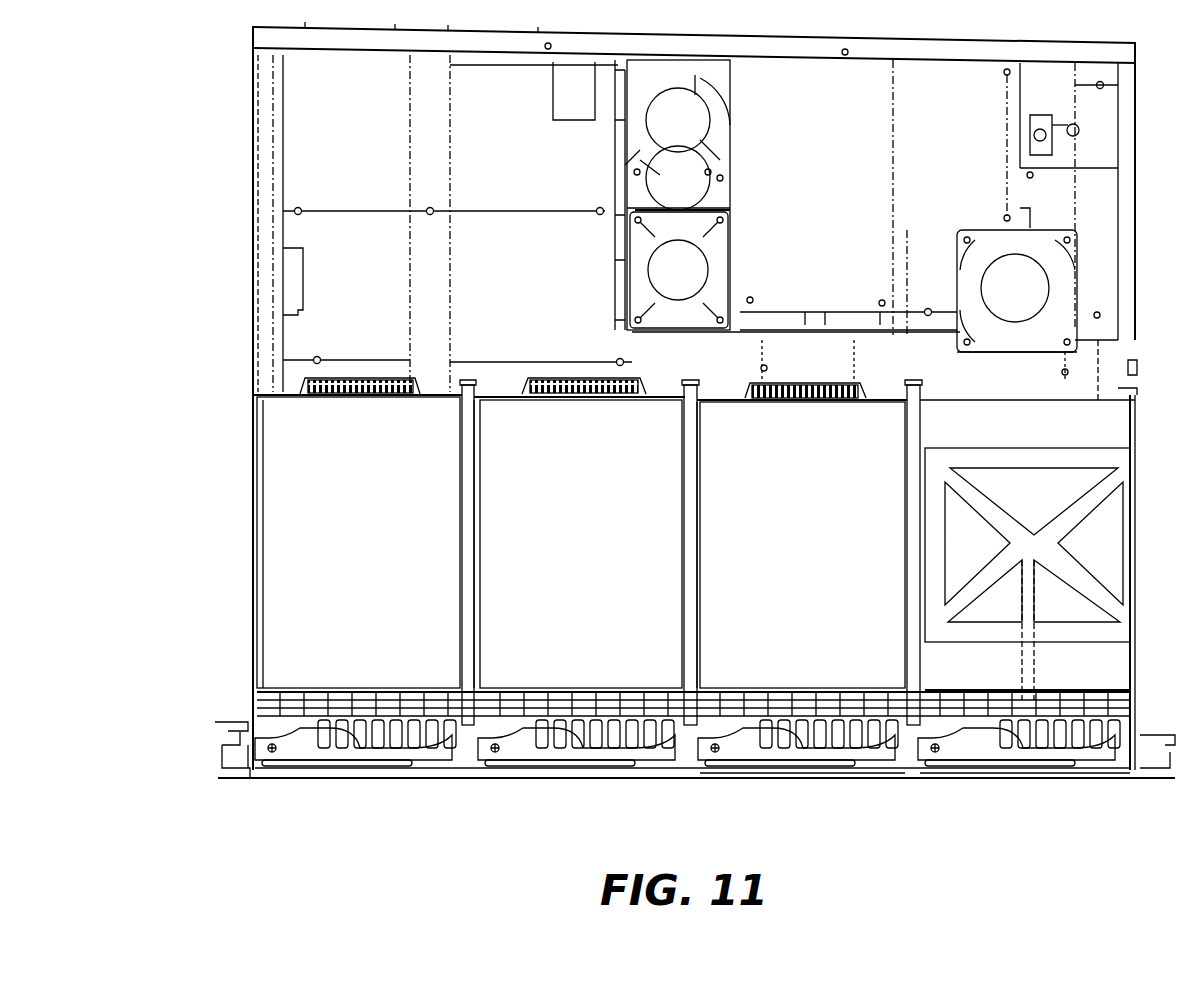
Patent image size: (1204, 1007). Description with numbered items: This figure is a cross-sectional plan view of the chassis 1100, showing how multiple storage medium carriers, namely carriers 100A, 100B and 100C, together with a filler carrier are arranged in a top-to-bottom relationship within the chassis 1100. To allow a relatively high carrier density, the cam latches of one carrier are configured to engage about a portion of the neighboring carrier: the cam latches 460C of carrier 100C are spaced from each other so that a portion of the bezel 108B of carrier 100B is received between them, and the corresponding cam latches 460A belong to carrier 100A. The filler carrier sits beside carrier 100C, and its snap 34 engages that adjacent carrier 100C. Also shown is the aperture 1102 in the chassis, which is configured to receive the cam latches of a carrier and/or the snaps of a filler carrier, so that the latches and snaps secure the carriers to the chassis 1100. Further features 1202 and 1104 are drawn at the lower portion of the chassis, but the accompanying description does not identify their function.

The chassis 1100 is at (246, 352).
The mounting foot 1202 is at (226, 741).
The storage medium carrier 100A is at (388, 551).
The storage medium carrier 100B is at (609, 551).
The storage medium carrier 100C is at (829, 551).
The bezel 108B is at (651, 686).
The latch A 460A is at (243, 775).
The cam latches 460C is at (696, 775).
The snap 34 is at (919, 786).
The aperture 1102 is at (818, 786).
The bottom rail section 1104 is at (1013, 790).